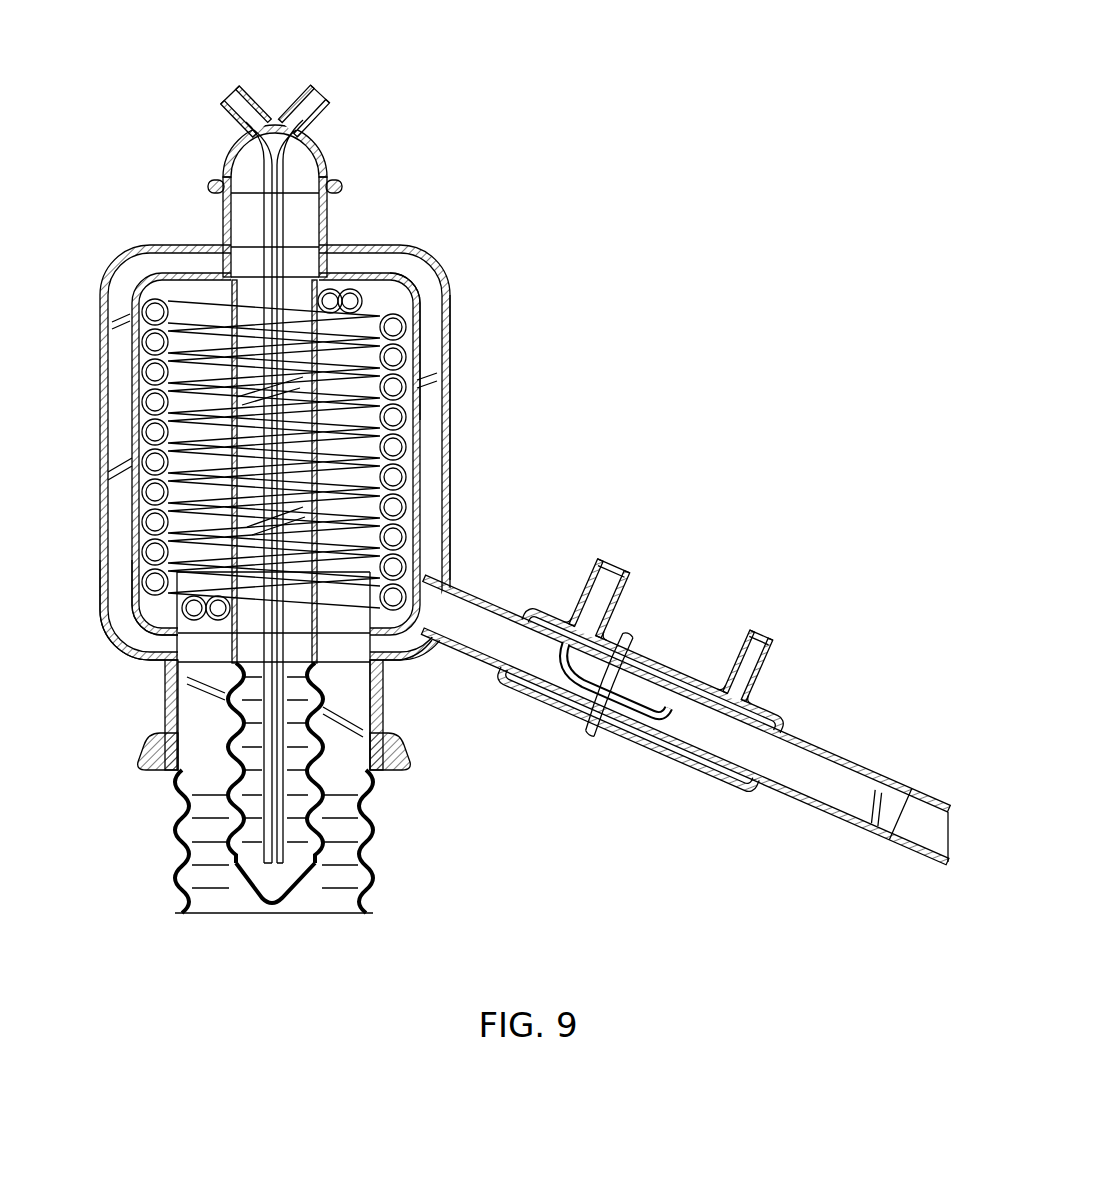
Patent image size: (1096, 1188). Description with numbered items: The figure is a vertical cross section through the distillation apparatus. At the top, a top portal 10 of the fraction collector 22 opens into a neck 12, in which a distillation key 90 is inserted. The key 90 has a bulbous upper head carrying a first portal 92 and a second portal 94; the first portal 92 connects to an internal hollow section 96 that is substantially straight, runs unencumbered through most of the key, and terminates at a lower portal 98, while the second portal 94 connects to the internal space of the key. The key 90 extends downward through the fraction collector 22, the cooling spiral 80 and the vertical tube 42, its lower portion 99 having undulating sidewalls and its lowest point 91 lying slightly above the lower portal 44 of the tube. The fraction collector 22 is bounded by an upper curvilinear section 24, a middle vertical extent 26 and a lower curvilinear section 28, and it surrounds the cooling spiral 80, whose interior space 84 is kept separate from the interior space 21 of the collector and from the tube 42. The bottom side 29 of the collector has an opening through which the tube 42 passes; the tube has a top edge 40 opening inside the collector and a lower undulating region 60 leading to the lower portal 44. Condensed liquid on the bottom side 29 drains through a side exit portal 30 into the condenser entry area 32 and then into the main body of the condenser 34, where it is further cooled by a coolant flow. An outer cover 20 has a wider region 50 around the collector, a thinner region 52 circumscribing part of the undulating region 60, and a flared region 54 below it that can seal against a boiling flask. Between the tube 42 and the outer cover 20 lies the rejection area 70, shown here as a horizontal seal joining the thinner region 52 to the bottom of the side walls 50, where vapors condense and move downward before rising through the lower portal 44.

The top portal 10 is at (321, 199).
The neck 12 is at (308, 277).
The outer cover 20 is at (378, 290).
The interior space 21 is at (410, 255).
The fraction collector 22 is at (407, 360).
The upper curvilinear section 24 is at (143, 280).
The middle vertical extent 26 is at (133, 413).
The lower curvilinear section 28 is at (137, 628).
The bottom side 29 is at (168, 635).
The side exit portal 30 is at (640, 700).
The condenser entry area 32 is at (615, 681).
The condenser 34 is at (670, 631).
The top edge 40 is at (685, 720).
The vertical tube 42 is at (160, 557).
The lower portal 44 is at (340, 913).
The wider region 50 is at (447, 390).
The thinner region 52 is at (168, 700).
The flared region 54 is at (148, 772).
The undulating region 60 is at (183, 870).
The rejection area 70 is at (383, 668).
The cooling spiral 80 is at (397, 400).
The interior space 84 is at (157, 493).
The distillation key 90 is at (238, 165).
The lowest point 91 is at (275, 910).
The first portal 92 is at (250, 140).
The second portal 94 is at (327, 103).
The internal hollow section 96 is at (272, 370).
The lower portal 98 is at (267, 870).
The lower portion 99 is at (320, 820).